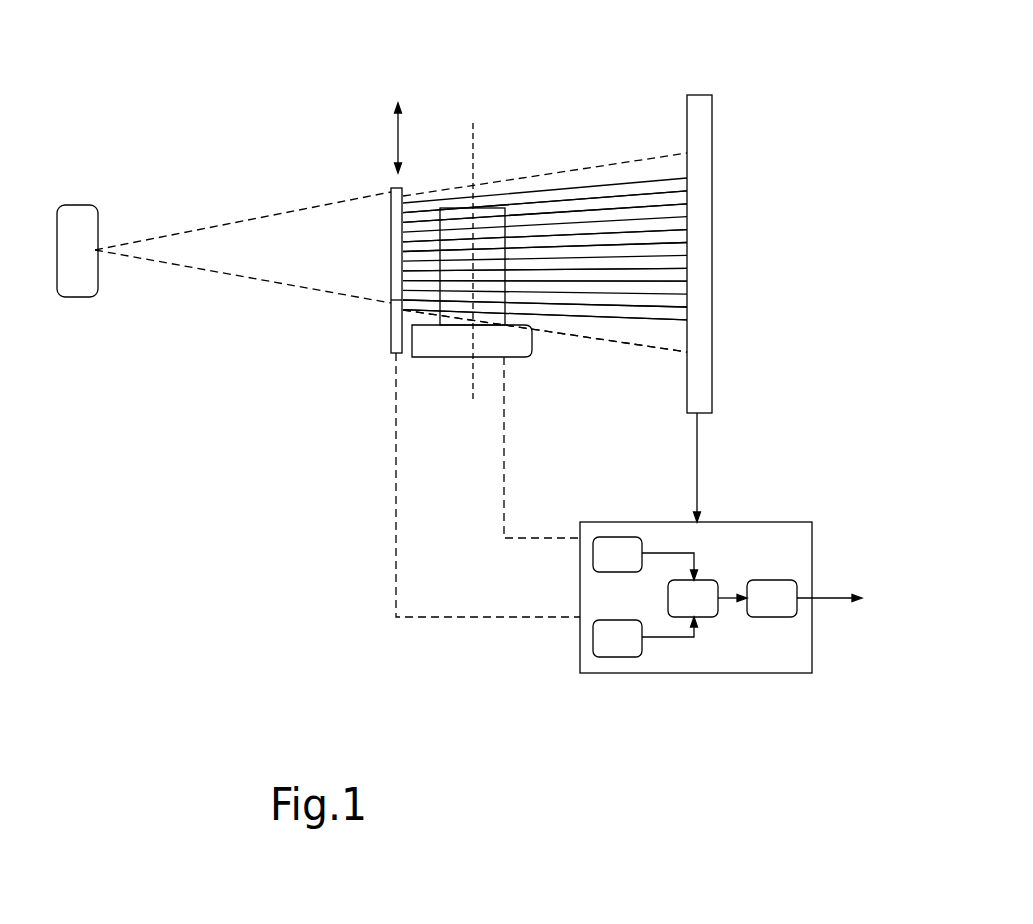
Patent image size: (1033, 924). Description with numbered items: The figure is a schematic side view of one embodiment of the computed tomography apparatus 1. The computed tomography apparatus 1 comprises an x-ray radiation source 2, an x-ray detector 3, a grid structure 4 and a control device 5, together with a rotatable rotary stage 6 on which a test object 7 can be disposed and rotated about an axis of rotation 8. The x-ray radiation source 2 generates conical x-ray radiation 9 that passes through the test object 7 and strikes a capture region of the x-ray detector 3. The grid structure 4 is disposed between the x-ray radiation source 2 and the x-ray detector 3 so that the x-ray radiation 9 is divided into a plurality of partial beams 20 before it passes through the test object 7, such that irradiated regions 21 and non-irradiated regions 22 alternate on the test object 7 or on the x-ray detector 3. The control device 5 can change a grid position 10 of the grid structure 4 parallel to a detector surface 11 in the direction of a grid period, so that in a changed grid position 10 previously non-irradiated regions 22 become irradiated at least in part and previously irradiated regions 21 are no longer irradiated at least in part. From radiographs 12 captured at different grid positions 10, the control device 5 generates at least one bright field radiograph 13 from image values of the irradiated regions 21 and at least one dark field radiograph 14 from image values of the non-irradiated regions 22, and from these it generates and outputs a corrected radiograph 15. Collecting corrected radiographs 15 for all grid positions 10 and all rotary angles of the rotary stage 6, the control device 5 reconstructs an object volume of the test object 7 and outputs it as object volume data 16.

The computed tomography apparatus 1 is at (88, 127).
The x-ray radiation source 2 is at (57, 253).
The x-ray detector 3 is at (699, 95).
The grid structure 4 is at (390, 342).
The control device 5 is at (765, 520).
The rotary stage 6 is at (452, 343).
The test object 7 is at (388, 312).
The axis of rotation 8 is at (475, 150).
The x-ray radiation 9 is at (592, 163).
The grid position 10 is at (395, 145).
The detector surface 11 is at (668, 360).
The radiographs 12 is at (692, 463).
The bright field radiograph 13 is at (610, 553).
The dark field radiograph 14 is at (618, 640).
The corrected radiograph 15 is at (700, 607).
The object volume data 16 is at (770, 605).
The partial beams 20 is at (545, 249).
The irradiated regions 21 is at (687, 155).
The non-irradiated regions 22 is at (687, 190).